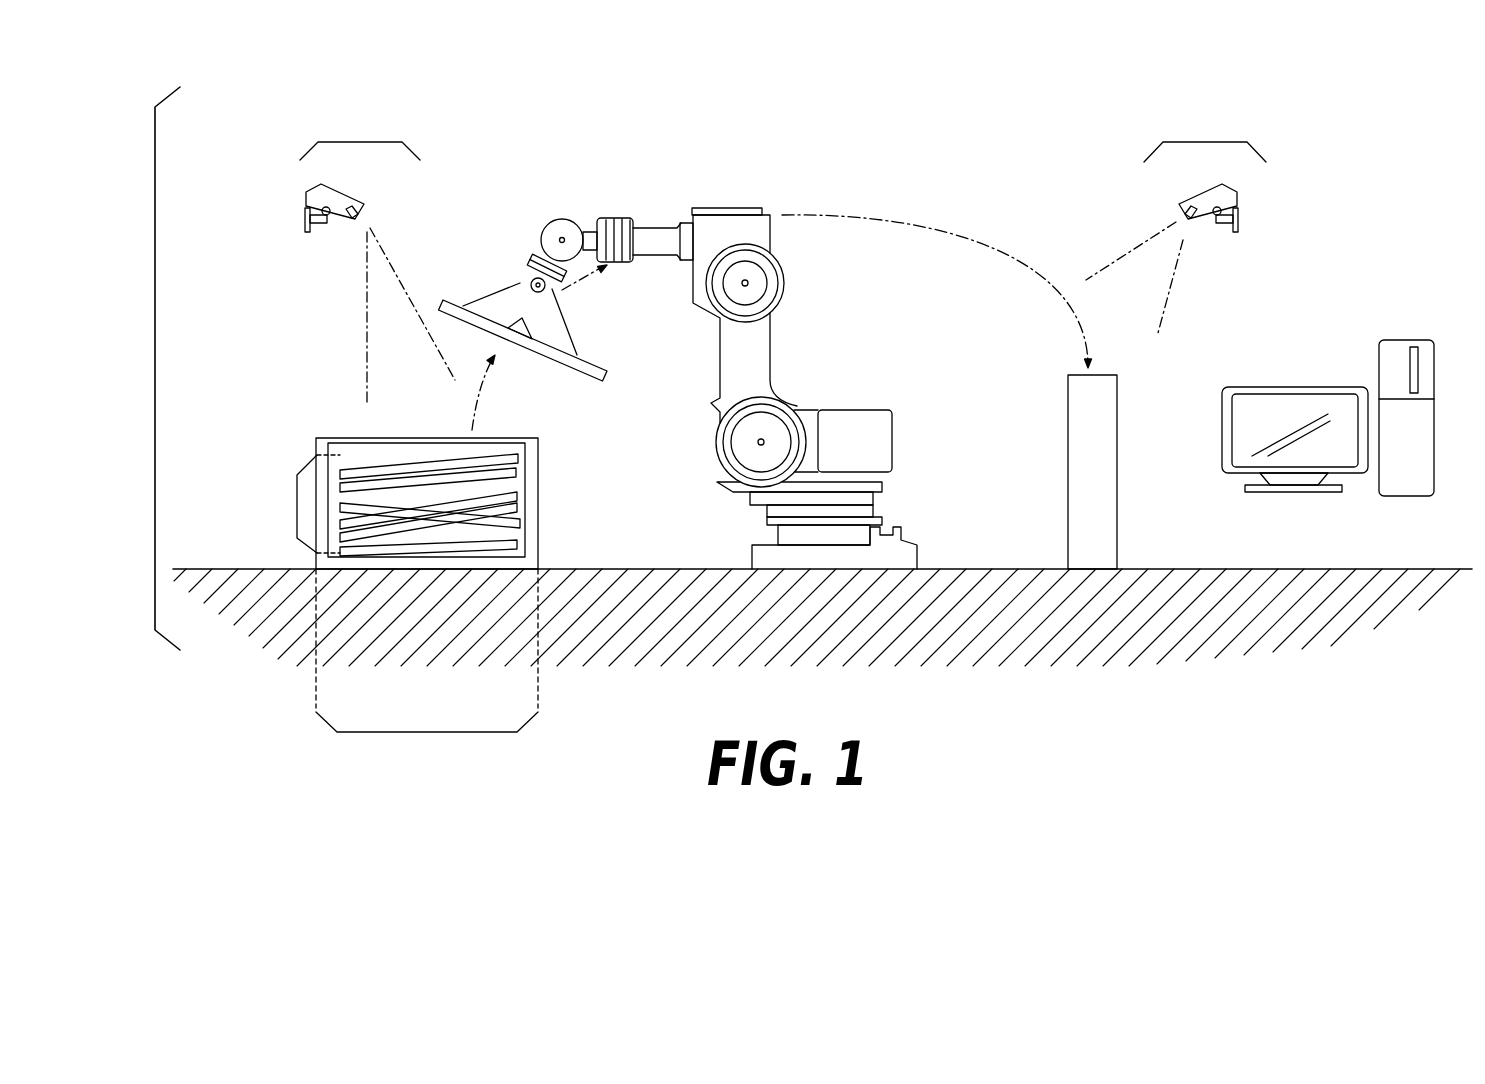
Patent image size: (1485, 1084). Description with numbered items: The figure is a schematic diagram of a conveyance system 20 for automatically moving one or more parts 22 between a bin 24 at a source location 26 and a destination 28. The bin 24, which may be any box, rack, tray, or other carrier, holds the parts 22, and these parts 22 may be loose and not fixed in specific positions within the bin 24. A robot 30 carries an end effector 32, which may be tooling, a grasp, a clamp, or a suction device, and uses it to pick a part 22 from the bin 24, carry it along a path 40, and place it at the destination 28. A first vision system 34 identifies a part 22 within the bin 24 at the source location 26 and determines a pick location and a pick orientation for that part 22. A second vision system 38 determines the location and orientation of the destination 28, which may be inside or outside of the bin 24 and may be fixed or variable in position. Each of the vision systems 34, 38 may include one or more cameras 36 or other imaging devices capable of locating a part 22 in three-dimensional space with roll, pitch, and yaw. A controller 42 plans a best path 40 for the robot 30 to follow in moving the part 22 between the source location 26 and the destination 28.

The conveyance system 20 is at (155, 400).
The part 22 is at (297, 507).
The bin 24 is at (322, 438).
The source location 26 is at (430, 732).
The destination 28 is at (1082, 373).
The robot 30 is at (725, 203).
The end effector 32 is at (502, 287).
The first vision system 34 is at (363, 142).
The camera 36 is at (308, 193).
The second vision system 38 is at (1175, 142).
The path 40 is at (895, 218).
The controller 42 is at (1292, 387).